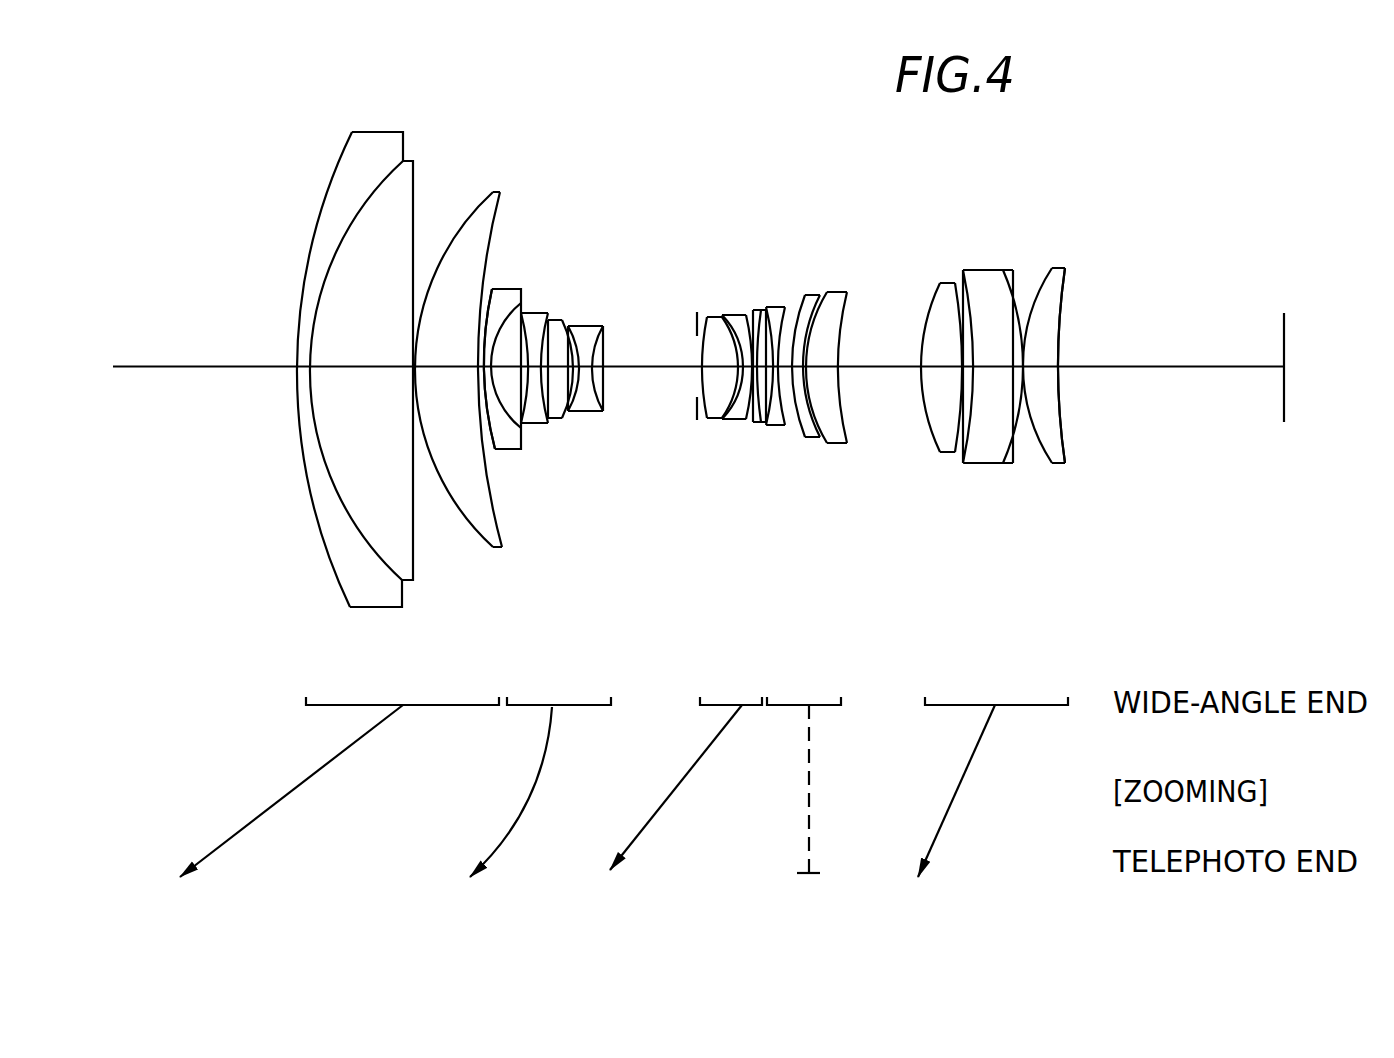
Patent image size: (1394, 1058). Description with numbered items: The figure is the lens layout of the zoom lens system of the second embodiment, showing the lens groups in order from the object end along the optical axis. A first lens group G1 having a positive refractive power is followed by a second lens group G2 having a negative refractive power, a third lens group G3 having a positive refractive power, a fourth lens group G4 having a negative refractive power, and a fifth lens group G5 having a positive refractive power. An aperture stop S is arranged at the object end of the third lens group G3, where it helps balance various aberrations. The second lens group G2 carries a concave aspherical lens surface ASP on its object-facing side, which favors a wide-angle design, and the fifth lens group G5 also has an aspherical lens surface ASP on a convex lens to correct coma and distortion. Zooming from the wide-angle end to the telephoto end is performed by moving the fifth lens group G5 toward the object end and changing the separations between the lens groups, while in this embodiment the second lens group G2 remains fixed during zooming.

The first lens group G1 is at (500, 116).
The second lens group G2 is at (612, 261).
The third lens group G3 is at (758, 263).
The fourth lens group G4 is at (845, 263).
The fifth lens group G5 is at (1065, 263).
The aperture stop S is at (697, 324).
The aspherical lens surface ASP is at (492, 441).